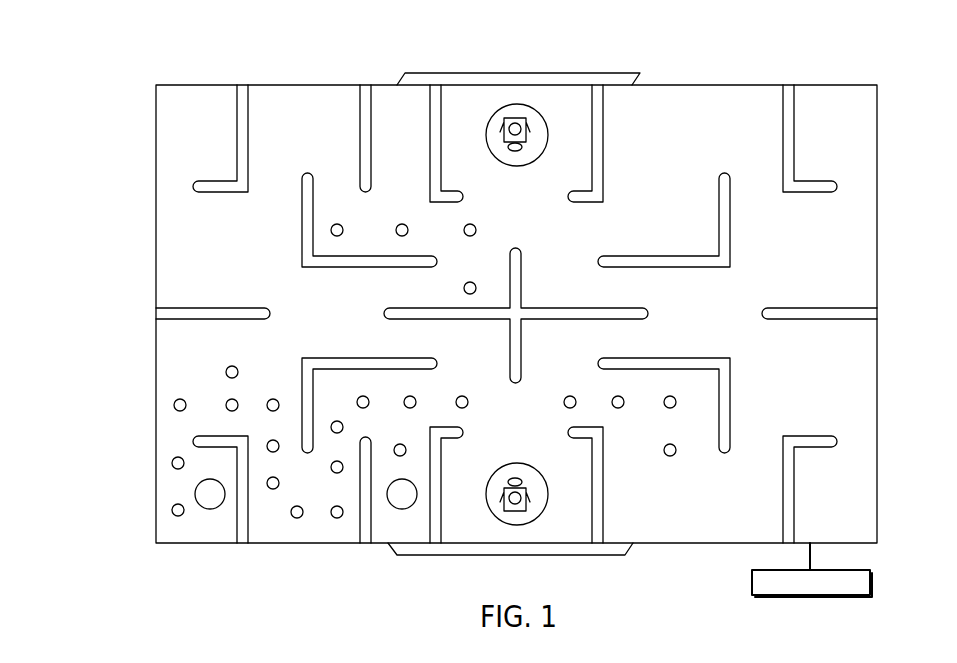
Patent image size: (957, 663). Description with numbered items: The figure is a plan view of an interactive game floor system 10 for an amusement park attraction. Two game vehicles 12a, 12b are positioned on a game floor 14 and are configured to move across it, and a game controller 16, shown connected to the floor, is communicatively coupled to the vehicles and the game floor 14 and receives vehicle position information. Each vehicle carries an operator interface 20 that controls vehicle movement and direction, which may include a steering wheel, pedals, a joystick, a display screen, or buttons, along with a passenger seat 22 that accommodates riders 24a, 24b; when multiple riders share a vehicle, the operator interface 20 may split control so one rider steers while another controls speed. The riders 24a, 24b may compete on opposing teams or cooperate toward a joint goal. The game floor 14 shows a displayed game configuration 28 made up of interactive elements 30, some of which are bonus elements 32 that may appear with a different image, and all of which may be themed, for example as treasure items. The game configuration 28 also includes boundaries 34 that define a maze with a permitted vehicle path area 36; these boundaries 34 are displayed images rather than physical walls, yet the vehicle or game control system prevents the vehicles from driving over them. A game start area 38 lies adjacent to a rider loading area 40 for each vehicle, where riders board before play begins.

The interactive game floor system 10 is at (135, 130).
The game vehicle 12a is at (548, 493).
The game vehicle 12b is at (540, 113).
The game floor 14 is at (178, 263).
The game controller 16 is at (752, 583).
The operator interface 20 is at (507, 487).
The passenger seat 22 is at (526, 506).
The rider 24a is at (506, 500).
The rider 24b is at (507, 124).
The displayed game configuration 28 is at (179, 185).
The interactive elements 30 is at (332, 515).
The bonus elements 32 is at (200, 506).
The boundaries 34 is at (731, 222).
The permitted vehicle path area 36 is at (752, 179).
The game start area 38 is at (603, 145).
The rider loading area 40 is at (636, 82).